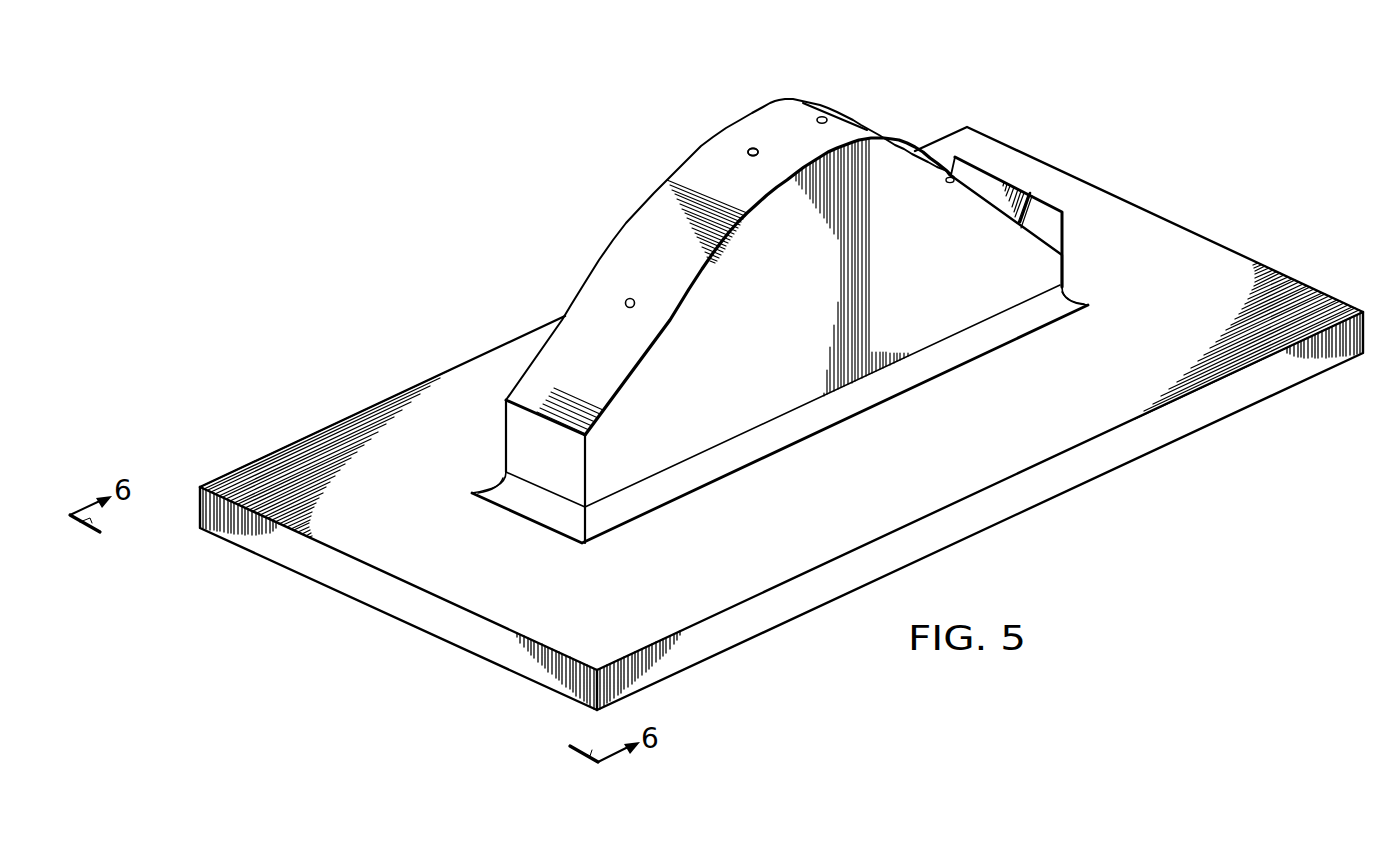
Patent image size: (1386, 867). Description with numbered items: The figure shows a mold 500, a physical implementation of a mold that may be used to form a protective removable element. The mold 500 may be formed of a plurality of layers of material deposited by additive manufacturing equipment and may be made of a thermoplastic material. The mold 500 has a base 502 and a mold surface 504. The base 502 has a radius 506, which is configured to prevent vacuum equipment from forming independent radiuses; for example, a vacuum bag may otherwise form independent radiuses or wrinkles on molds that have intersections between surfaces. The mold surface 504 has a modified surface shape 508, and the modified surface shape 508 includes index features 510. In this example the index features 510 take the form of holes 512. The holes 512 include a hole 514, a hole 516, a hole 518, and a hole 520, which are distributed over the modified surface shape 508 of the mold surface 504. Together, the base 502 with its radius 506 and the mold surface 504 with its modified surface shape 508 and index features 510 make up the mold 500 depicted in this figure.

The mold 500 is at (457, 89).
The base 502 is at (1198, 246).
The mold surface 504 is at (970, 307).
The radius 506 is at (796, 422).
The modified surface shape 508 is at (629, 179).
The index features 510 is at (737, 138).
The holes 512 is at (605, 310).
The hole 514 is at (634, 299).
The hole 516 is at (758, 151).
The hole 518 is at (816, 120).
The hole 520 is at (945, 181).